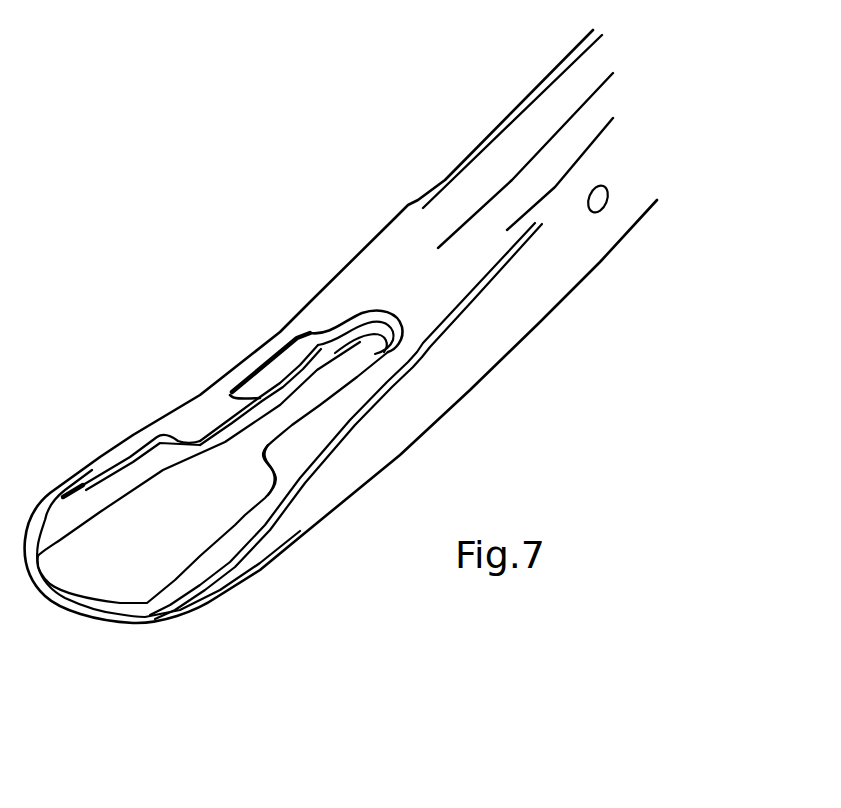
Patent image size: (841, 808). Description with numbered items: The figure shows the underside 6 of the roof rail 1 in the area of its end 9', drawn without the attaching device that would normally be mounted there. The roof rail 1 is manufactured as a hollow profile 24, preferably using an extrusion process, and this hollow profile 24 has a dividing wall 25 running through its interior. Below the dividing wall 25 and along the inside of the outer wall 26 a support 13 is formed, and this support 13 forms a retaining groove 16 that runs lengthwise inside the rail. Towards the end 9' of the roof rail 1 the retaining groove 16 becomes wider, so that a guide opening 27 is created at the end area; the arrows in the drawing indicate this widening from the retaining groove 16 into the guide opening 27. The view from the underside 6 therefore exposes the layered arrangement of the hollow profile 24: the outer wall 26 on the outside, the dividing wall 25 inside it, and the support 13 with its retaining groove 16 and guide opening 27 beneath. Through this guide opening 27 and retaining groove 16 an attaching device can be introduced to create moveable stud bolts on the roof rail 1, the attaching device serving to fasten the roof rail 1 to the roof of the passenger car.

The roof rail 1 is at (307, 263).
The underside 6 is at (480, 193).
The end 9' is at (168, 421).
The support 13 is at (350, 372).
The retaining groove 16 is at (215, 470).
The hollow profile 24 is at (480, 338).
The dividing wall 25 is at (308, 363).
The outer wall 26 is at (267, 433).
The guide opening 27 is at (170, 484).